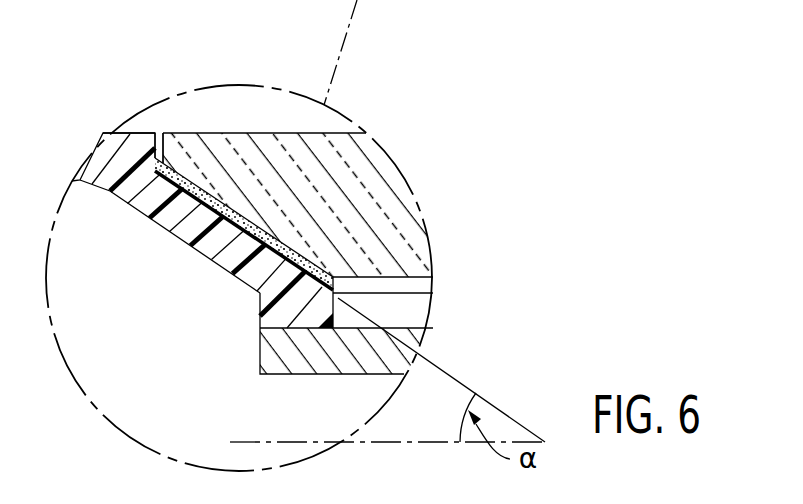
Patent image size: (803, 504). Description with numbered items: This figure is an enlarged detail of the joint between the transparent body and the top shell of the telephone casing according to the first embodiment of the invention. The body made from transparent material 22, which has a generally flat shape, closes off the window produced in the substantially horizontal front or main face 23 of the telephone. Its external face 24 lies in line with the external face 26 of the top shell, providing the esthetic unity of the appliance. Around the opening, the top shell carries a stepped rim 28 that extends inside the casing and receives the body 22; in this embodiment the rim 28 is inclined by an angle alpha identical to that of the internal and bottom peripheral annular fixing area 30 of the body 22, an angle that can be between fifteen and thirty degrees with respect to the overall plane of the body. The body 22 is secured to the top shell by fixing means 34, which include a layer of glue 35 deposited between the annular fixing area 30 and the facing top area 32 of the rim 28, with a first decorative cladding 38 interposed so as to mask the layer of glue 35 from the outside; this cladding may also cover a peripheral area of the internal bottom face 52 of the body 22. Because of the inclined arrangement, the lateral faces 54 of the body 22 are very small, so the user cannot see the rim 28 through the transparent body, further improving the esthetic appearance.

The body made from transparent material 22 is at (385, 200).
The front or main face 23 is at (112, 122).
The external face of the transparent body 24 is at (338, 132).
The external face of the top shell 26 is at (142, 131).
The stepped rim 28 is at (190, 230).
The peripheral annular fixing area 30 is at (198, 205).
The top area of the rim 32 is at (150, 213).
The fixing means 34 is at (262, 262).
The layer of glue 35 is at (208, 252).
The first decorative cladding 38 is at (263, 240).
The internal bottom face of the body 52 is at (412, 289).
The lateral faces of the body 54 is at (159, 140).